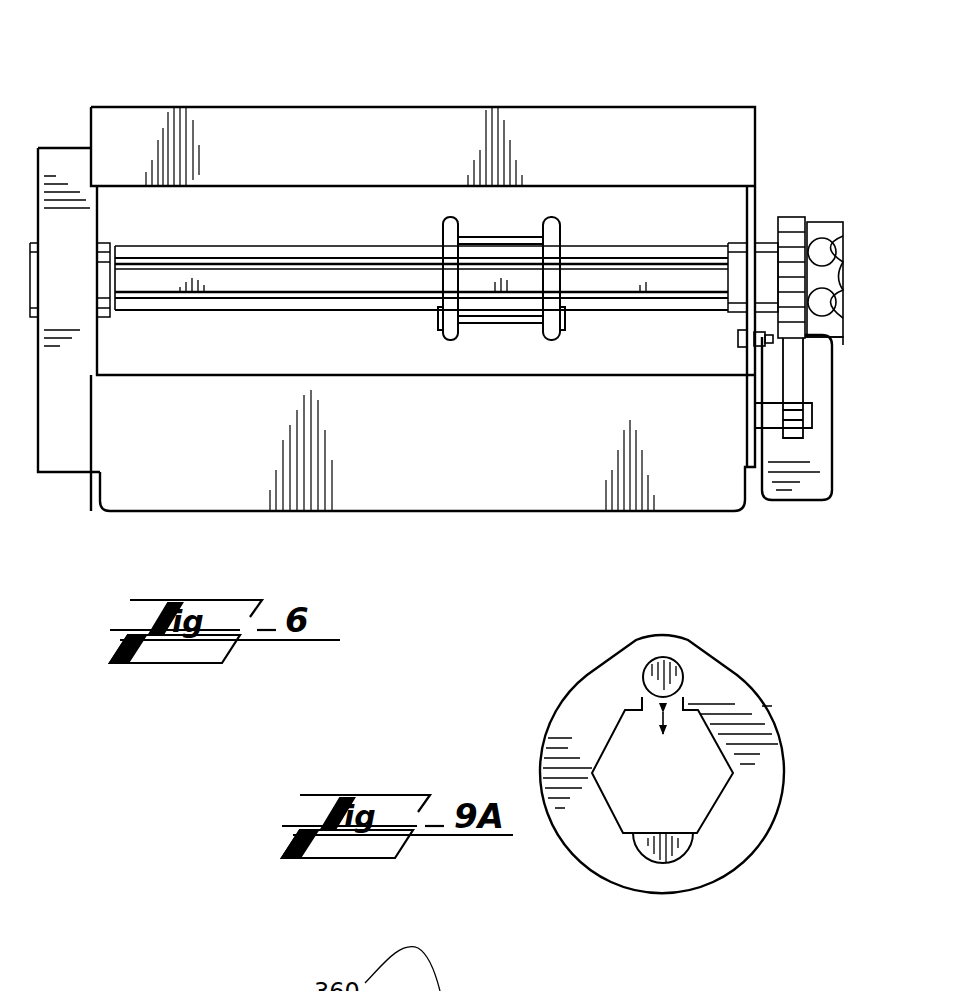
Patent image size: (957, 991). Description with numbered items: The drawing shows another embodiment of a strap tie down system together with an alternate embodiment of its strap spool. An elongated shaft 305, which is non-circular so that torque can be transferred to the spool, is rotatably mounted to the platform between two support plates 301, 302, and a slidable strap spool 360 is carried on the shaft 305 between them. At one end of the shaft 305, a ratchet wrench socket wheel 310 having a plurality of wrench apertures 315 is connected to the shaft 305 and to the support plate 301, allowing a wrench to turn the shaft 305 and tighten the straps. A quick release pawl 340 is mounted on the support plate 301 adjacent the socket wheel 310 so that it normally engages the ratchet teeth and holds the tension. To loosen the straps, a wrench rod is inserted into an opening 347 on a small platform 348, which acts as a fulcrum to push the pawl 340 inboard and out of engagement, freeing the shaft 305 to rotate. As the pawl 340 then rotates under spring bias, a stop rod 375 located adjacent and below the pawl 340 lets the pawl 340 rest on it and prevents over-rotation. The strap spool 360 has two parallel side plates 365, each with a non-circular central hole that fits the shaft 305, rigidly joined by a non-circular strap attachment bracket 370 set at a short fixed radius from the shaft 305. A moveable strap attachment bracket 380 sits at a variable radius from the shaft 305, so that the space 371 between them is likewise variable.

In FIG. 6, the support plate 301 is at (753, 206).
In FIG. 6, the support plate 302 is at (91, 132).
In FIG. 6, the elongated shaft 305 is at (268, 303).
In FIG. 6, the ratchet wrench socket wheel 310 is at (803, 217).
In FIG. 6, the wrench apertures 315 is at (840, 262).
In FIG. 6, the quick release pawl 340 is at (805, 342).
In FIG. 6, the opening 347 is at (803, 377).
In FIG. 6, the small platform 348 is at (803, 488).
In FIG. 6, the stop rod 375 is at (738, 336).
In FIG. 6, the strap spool 360 is at (565, 227).
In FIG. 9A, the strap spool 360 is at (538, 684).
In FIG. 9A, the side plates 365 is at (772, 795).
In FIG. 9A, the strap attachment bracket 370 is at (672, 848).
In FIG. 9A, the space 371 is at (683, 700).
In FIG. 9A, the moveable strap attachment bracket 380 is at (653, 668).